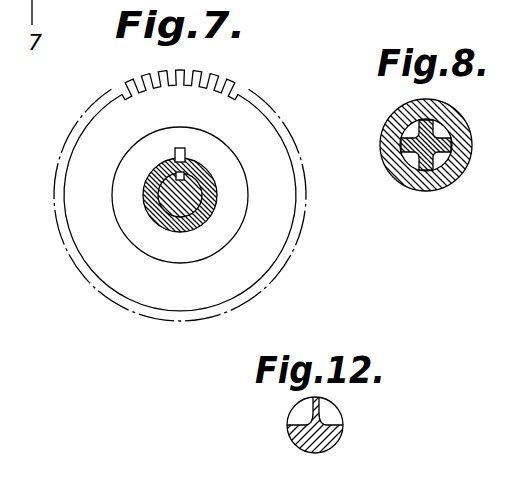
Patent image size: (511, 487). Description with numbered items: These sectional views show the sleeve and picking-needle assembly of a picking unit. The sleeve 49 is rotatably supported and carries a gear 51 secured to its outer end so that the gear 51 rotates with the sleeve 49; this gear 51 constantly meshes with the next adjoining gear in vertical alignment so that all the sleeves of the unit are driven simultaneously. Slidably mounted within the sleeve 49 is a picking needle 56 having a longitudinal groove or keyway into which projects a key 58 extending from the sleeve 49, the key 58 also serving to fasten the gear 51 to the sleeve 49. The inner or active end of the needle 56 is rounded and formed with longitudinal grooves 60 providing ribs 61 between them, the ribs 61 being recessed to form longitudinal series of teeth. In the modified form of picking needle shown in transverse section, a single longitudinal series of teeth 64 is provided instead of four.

In FIG. 7, the sleeve 49 is at (210, 190).
In FIG. 8, the sleeve 49 is at (393, 125).
In FIG. 7, the gear 51 is at (262, 122).
In FIG. 7, the picking needle 56 is at (173, 193).
In FIG. 7, the key 58 is at (175, 152).
In FIG. 8, the longitudinal grooves 60 is at (440, 133).
In FIG. 8, the ribs 61 is at (437, 158).
In FIG. 12, the single longitudinal series of teeth 64 is at (305, 410).